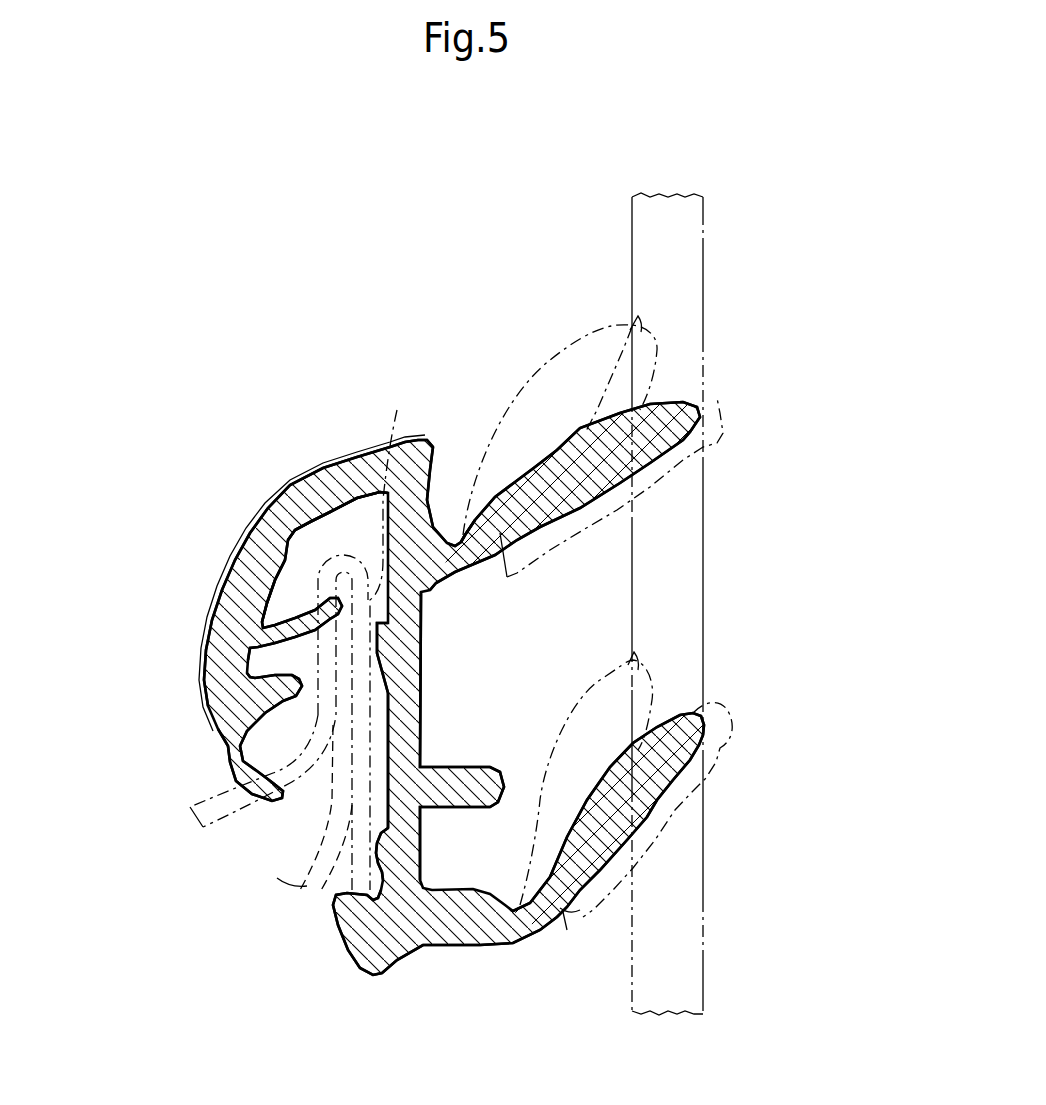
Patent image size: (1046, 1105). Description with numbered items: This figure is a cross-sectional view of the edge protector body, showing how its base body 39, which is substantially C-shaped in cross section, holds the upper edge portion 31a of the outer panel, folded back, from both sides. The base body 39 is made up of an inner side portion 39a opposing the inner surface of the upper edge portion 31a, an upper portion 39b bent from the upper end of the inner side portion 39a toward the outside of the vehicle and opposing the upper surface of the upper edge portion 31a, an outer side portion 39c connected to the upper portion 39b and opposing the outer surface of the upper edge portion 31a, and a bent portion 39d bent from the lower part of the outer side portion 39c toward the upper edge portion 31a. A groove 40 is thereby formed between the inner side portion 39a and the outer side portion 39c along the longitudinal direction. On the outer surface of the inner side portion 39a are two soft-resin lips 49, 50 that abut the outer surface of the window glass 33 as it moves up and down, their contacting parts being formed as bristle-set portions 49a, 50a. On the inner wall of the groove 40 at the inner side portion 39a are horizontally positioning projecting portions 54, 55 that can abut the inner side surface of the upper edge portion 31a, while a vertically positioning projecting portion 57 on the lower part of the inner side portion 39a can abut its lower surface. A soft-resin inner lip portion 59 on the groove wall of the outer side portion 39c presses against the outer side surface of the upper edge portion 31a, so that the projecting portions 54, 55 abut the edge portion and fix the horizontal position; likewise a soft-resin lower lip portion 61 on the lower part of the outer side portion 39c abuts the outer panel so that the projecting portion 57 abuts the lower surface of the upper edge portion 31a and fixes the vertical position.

The upper edge portion 31a is at (332, 642).
The window glass 33 is at (710, 887).
The base body 39 is at (403, 877).
The inner side portion 39a is at (415, 683).
The upper portion 39b is at (356, 475).
The outer side portion 39c is at (243, 597).
The bent portion 39d is at (247, 678).
The groove 40 is at (317, 533).
The lip 49 is at (670, 403).
The bristle-set portion 49a is at (728, 432).
The lip 50 is at (690, 713).
The bristle-set portion 50a is at (740, 730).
The horizontally positioning projecting portion 54 is at (378, 643).
The horizontally positioning projecting portion 55 is at (380, 849).
The vertically positioning projecting portion 57 is at (338, 927).
The inner lip portion 59 is at (293, 627).
The lower lip portion 61 is at (245, 752).